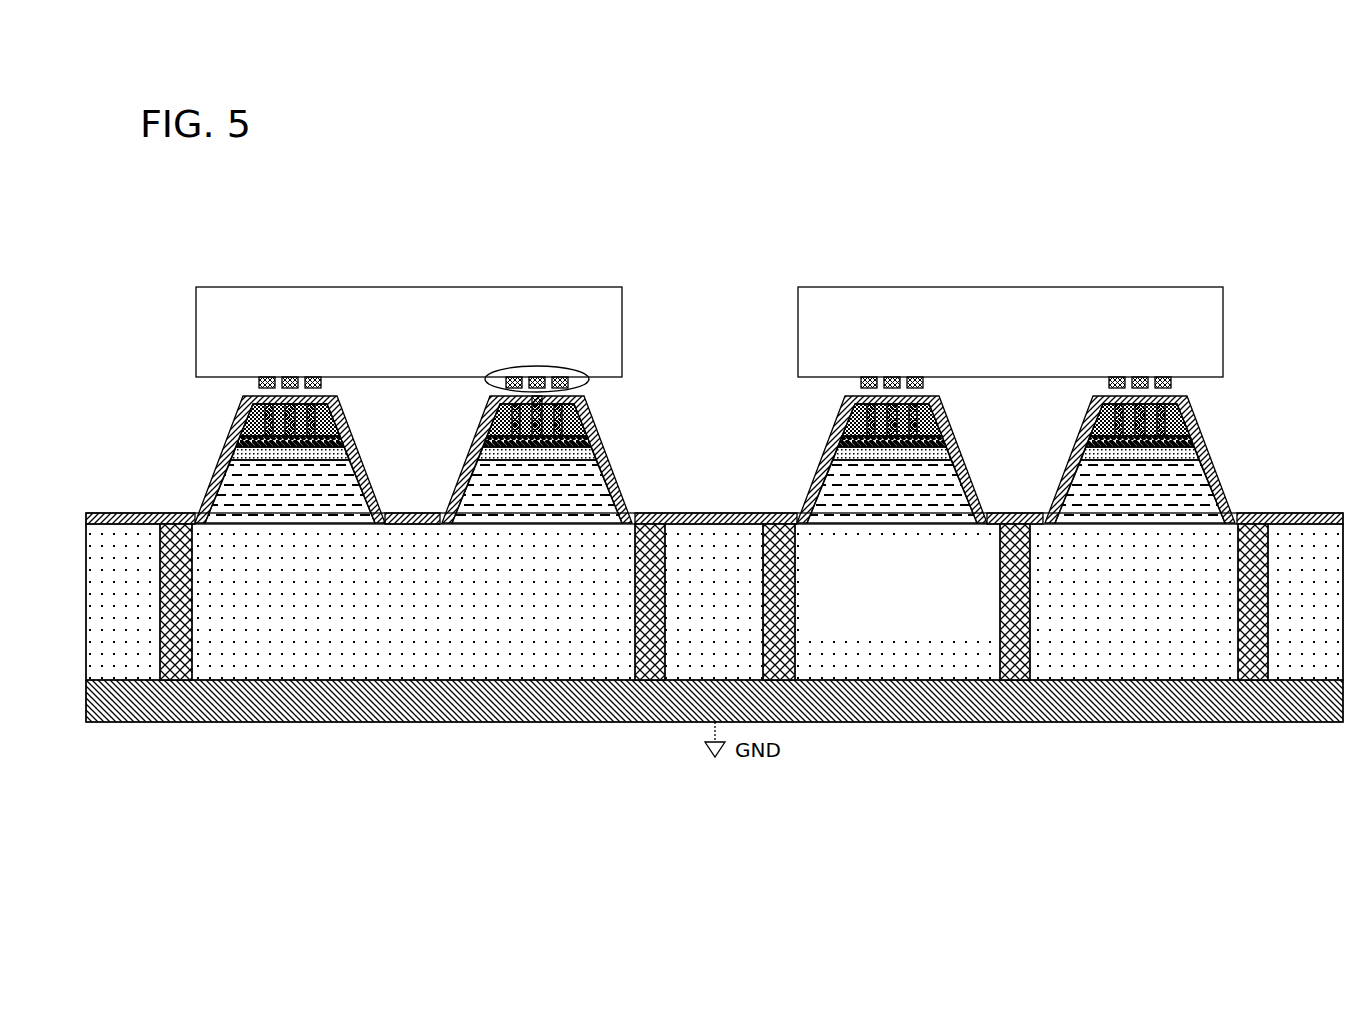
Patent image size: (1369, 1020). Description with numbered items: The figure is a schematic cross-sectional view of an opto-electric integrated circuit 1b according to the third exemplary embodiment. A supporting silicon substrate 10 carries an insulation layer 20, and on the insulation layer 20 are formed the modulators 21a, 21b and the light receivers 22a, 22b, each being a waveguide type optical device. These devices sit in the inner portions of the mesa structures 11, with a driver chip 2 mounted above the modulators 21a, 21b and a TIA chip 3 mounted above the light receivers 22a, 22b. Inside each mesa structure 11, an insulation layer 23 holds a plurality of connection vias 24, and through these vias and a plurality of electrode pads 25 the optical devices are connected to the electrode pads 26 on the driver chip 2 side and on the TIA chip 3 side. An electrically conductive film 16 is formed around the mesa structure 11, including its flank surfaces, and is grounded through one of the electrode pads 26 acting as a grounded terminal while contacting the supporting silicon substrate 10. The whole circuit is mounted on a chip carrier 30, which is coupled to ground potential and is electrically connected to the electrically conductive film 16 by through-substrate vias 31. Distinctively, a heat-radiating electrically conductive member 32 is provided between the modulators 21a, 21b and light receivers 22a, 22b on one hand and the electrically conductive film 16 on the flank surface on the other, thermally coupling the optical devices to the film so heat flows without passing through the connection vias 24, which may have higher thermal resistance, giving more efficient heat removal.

The opto-electric integrated circuit 1b is at (1190, 211).
The driver chip 2 is at (604, 290).
The TIA chip 3 is at (1205, 290).
The supporting silicon substrate 10 is at (960, 660).
The mesa structure 11 is at (435, 454).
The electrically conductive film 16 is at (631, 497).
The insulation layer 20 is at (506, 505).
The modulator 21a is at (308, 425).
The modulator 21b is at (538, 443).
The light receiver 22a is at (937, 427).
The light receiver 22b is at (1130, 445).
The insulation layer 23 is at (588, 428).
The connection via 24 is at (491, 417).
The electrode pad 25 is at (544, 398).
The electrode pad 26 is at (573, 362).
The chip carrier 30 is at (478, 704).
The through-substrate via 31 is at (783, 653).
The heat-radiating electrically conductive member 32 is at (838, 437).